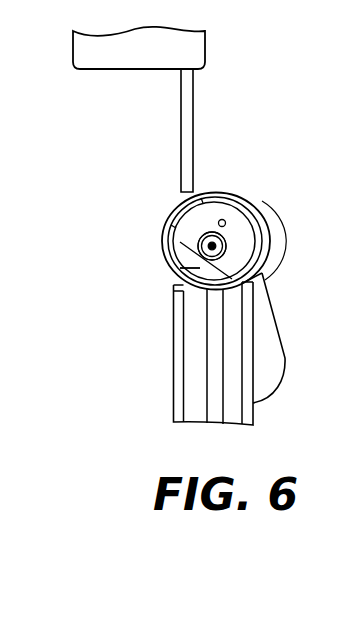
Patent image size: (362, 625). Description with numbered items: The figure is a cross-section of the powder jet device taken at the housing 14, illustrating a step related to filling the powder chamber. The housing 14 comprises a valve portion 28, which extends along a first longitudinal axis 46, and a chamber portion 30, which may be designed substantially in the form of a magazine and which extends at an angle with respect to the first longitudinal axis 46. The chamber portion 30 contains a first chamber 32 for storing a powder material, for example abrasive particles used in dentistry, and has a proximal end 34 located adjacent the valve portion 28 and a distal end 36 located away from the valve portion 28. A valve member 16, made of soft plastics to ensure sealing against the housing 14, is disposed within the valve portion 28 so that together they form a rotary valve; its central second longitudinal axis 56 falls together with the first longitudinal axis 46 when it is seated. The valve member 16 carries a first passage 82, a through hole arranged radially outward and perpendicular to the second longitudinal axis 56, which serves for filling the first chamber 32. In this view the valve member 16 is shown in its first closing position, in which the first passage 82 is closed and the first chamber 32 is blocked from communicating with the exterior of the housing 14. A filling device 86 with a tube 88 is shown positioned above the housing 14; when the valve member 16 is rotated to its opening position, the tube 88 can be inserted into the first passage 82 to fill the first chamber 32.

The housing 14 is at (245, 187).
The valve member 16 is at (237, 231).
The valve portion 28 is at (268, 252).
The chamber portion 30 is at (174, 357).
The first chamber 32 is at (191, 324).
The proximal end 34 is at (250, 288).
The distal end 36 is at (256, 436).
The first longitudinal axis 46 is at (200, 246).
The second longitudinal axis 56 is at (163, 247).
The first passage 82 is at (182, 270).
The filling device 86 is at (196, 47).
The tube 88 is at (190, 133).